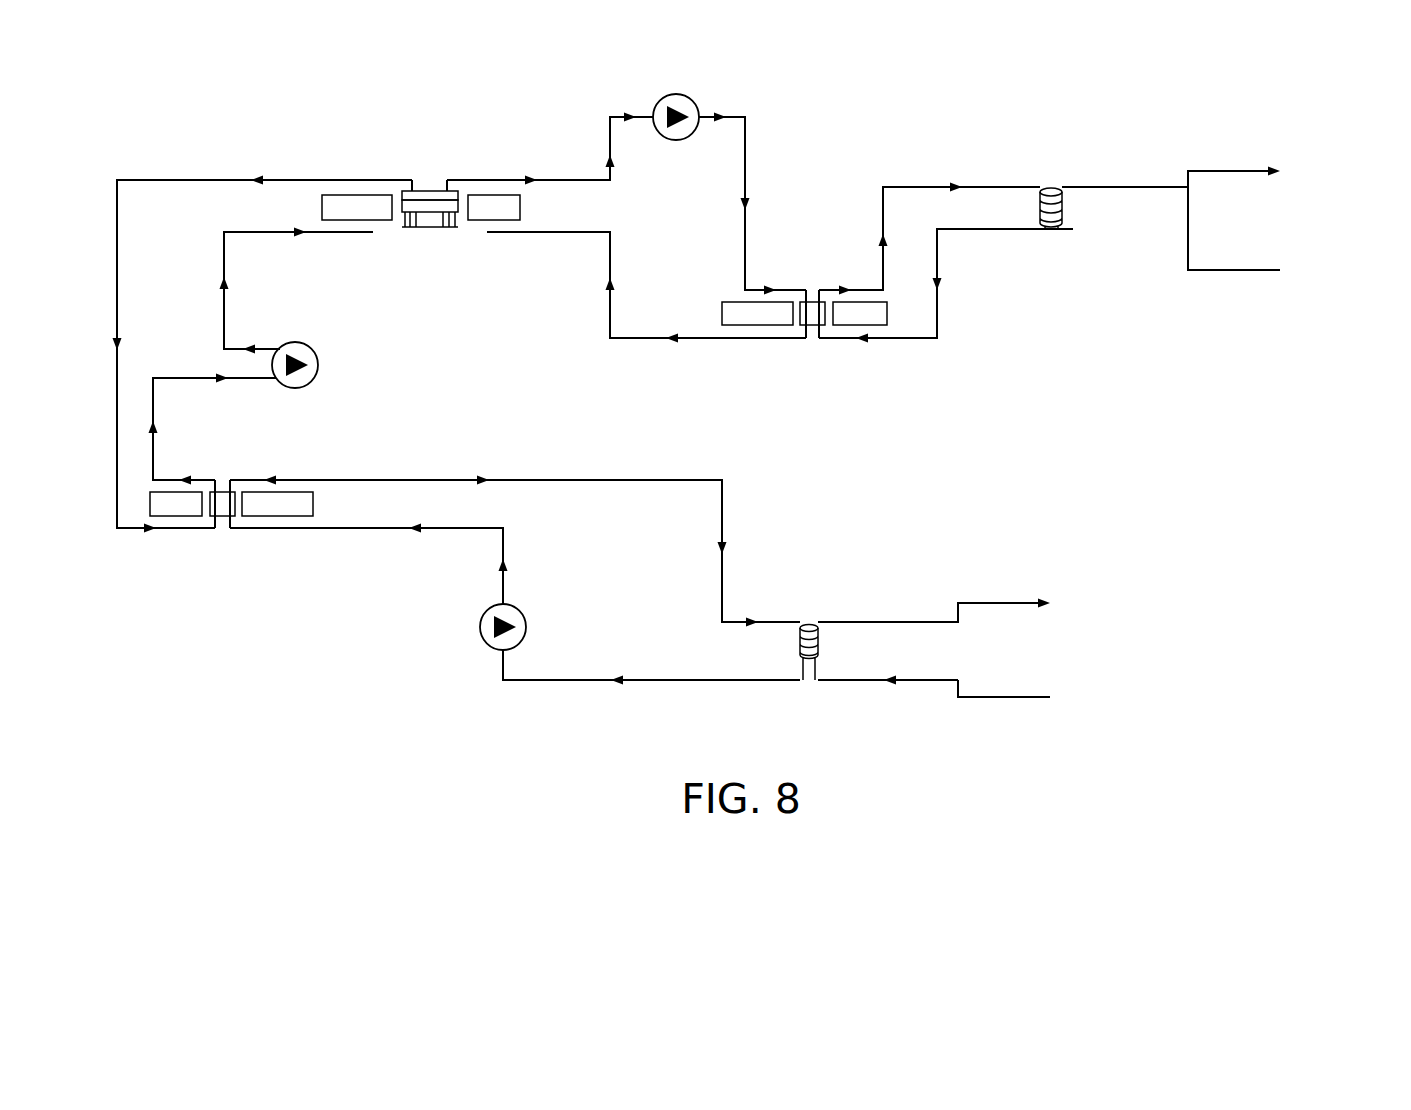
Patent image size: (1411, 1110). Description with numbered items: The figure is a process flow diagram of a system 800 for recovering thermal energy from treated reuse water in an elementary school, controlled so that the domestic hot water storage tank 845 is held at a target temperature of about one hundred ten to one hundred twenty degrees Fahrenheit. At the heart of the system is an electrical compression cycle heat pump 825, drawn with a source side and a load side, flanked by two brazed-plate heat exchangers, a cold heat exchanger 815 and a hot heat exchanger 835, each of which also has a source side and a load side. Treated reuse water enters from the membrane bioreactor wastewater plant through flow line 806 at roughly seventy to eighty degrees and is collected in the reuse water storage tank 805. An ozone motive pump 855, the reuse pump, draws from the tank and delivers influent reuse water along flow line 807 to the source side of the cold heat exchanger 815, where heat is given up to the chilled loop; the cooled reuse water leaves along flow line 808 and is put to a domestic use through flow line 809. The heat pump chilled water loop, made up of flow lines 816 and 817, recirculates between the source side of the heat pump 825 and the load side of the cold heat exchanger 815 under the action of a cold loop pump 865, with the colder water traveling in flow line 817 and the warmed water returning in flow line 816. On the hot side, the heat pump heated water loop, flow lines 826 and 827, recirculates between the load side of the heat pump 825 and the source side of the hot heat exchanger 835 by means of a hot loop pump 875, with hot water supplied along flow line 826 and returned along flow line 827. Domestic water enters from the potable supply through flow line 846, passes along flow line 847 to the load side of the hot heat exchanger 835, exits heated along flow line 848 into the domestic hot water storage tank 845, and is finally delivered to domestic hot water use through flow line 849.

The system 800 is at (1268, 534).
The reuse water storage tank 805 is at (805, 703).
The flow line 806 is at (1010, 697).
The flow line 807 is at (350, 528).
The flow line 808 is at (585, 479).
The flow line 809 is at (908, 620).
The cold heat exchanger 815 is at (220, 492).
The flow line 816 is at (222, 253).
The flow line 817 is at (117, 407).
The heat pump 825 is at (432, 191).
The flow line 826 is at (567, 180).
The flow line 827 is at (633, 338).
The hot heat exchanger 835 is at (812, 302).
The domestic hot water storage tank 845 is at (1050, 190).
The flow line 846 is at (1235, 270).
The flow line 847 is at (925, 338).
The flow line 848 is at (913, 187).
The flow line 849 is at (1197, 171).
The ozone motive pump 855 is at (492, 611).
The pump 865 is at (311, 349).
The pump 875 is at (690, 100).